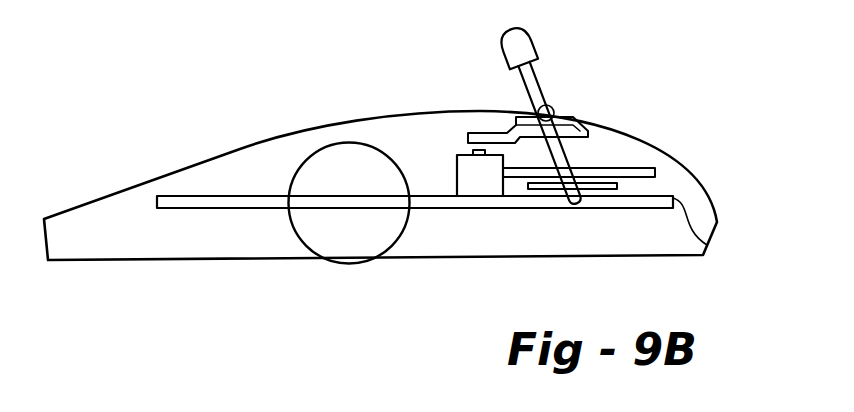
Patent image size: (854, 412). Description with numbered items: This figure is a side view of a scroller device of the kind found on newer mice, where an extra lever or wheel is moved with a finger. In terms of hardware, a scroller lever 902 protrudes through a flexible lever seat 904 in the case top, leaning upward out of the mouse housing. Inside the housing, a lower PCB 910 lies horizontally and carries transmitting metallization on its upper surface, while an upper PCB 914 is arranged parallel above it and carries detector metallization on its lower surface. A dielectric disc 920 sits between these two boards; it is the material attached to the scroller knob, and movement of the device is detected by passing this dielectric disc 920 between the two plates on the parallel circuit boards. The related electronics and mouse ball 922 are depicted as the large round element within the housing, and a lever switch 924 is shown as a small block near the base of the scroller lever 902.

The scroller lever 902 is at (538, 80).
The flexible lever seat 904 is at (620, 123).
The lower PCB 910 is at (707, 240).
The upper PCB 914 is at (655, 174).
The dielectric disc 920 is at (617, 187).
The related electronics and mouse ball 922 is at (343, 264).
The lever switch 924 is at (467, 188).